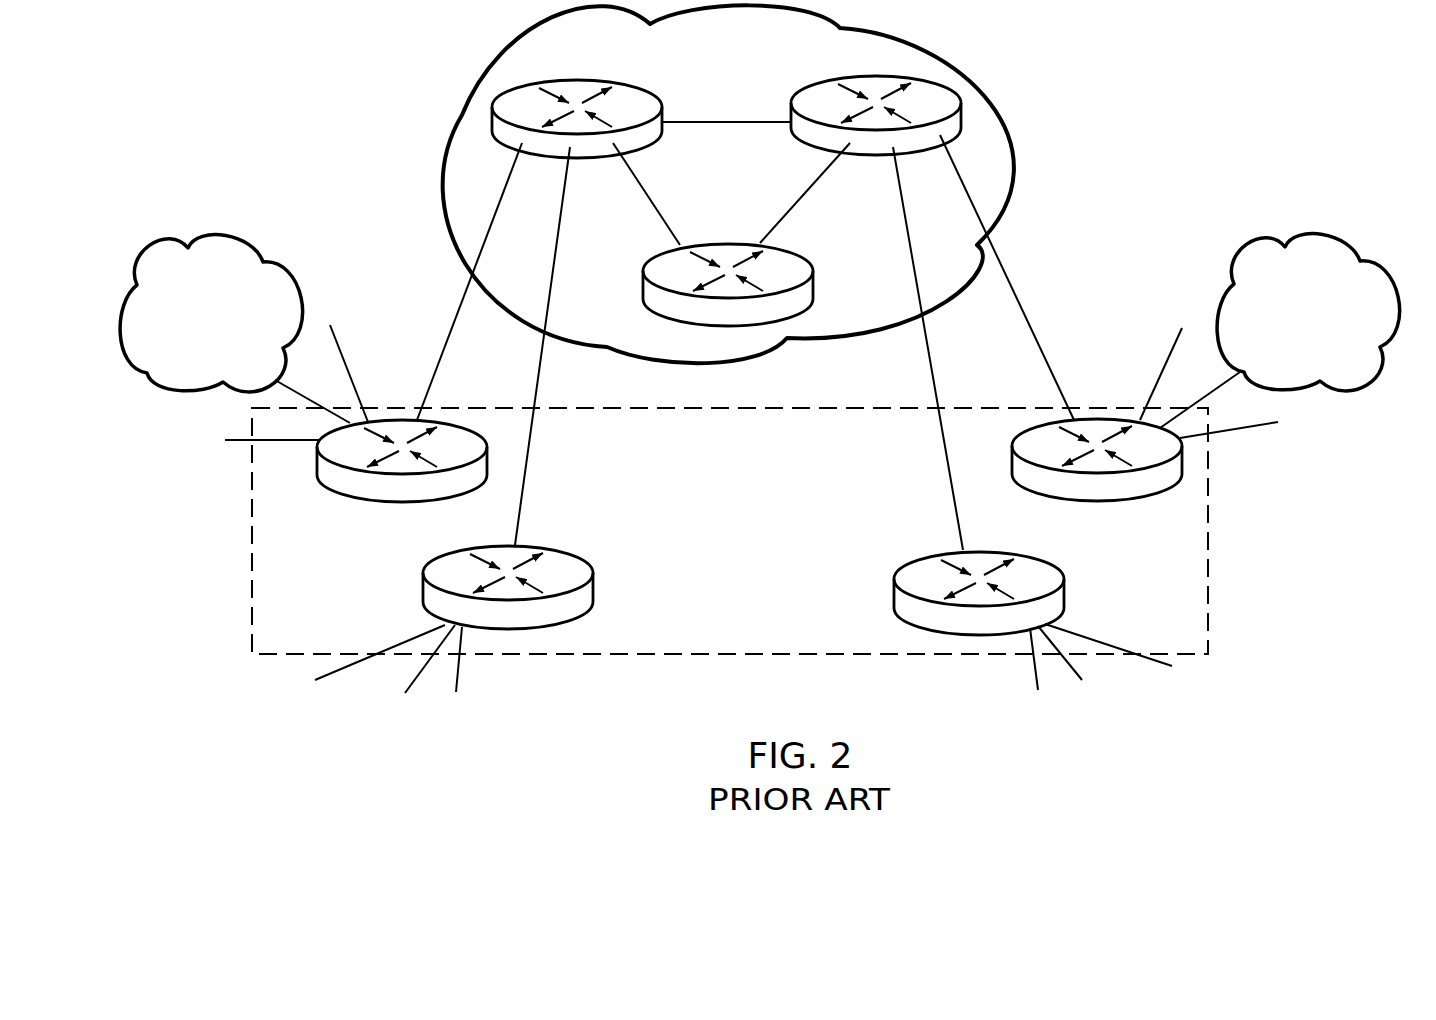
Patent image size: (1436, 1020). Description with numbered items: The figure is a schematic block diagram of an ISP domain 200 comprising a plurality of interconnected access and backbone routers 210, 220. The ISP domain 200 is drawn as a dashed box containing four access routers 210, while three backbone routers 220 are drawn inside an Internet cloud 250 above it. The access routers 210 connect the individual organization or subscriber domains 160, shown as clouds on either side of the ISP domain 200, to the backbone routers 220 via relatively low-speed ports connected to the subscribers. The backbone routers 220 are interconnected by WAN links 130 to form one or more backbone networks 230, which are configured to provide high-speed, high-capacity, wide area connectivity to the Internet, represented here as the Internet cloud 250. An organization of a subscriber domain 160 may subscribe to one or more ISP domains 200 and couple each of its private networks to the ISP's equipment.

The WAN link 130 is at (733, 122).
The subscriber domain 160 is at (760, 313).
The ISP domain 200 is at (730, 531).
The access router 210 is at (442, 499).
The backbone router 220 is at (597, 77).
The backbone network 230 is at (696, 194).
The Internet cloud 250 is at (728, 184).